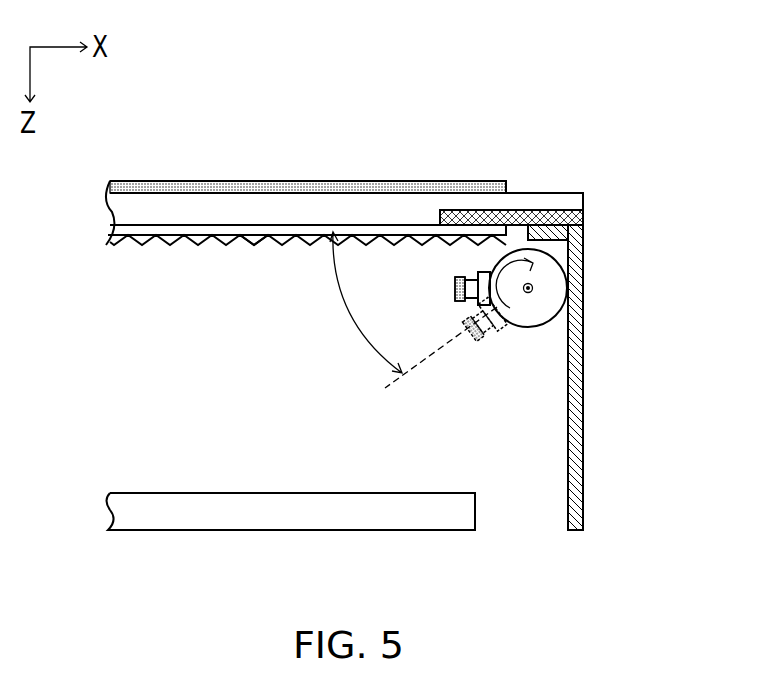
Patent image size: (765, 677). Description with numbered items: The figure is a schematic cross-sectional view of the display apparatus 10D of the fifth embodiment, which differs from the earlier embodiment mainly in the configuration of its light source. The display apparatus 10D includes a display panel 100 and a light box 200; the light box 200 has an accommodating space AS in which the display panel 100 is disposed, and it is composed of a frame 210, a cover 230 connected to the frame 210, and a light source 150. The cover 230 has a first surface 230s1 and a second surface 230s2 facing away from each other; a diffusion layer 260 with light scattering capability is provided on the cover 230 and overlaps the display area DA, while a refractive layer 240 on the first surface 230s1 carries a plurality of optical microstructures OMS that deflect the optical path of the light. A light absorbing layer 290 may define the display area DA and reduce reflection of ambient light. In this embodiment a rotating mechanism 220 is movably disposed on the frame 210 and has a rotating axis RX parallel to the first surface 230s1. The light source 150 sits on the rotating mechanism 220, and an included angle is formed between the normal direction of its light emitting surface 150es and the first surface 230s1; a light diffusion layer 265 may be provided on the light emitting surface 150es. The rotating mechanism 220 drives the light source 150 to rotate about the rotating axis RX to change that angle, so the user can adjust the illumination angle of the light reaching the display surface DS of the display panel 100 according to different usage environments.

The display panel 100 is at (476, 512).
The light source 150 is at (455, 282).
The light emitting surface 150es is at (474, 348).
The light box 200 is at (572, 32).
The frame 210 is at (575, 345).
The rotating mechanism 220 is at (574, 304).
The cover 230 is at (573, 203).
The first surface 230s1 is at (165, 238).
The second surface 230s2 is at (158, 183).
The refractive layer 240 is at (304, 226).
The diffusion layer 260 is at (238, 188).
The light diffusion layer 265 is at (462, 302).
The light absorbing layer 290 is at (578, 220).
The optical microstructures OMS is at (256, 238).
The accommodating space AS is at (152, 374).
The display surface DS is at (180, 479).
The display area DA is at (440, 185).
The rotating axis RX is at (585, 275).
The display apparatus 10D is at (674, 587).